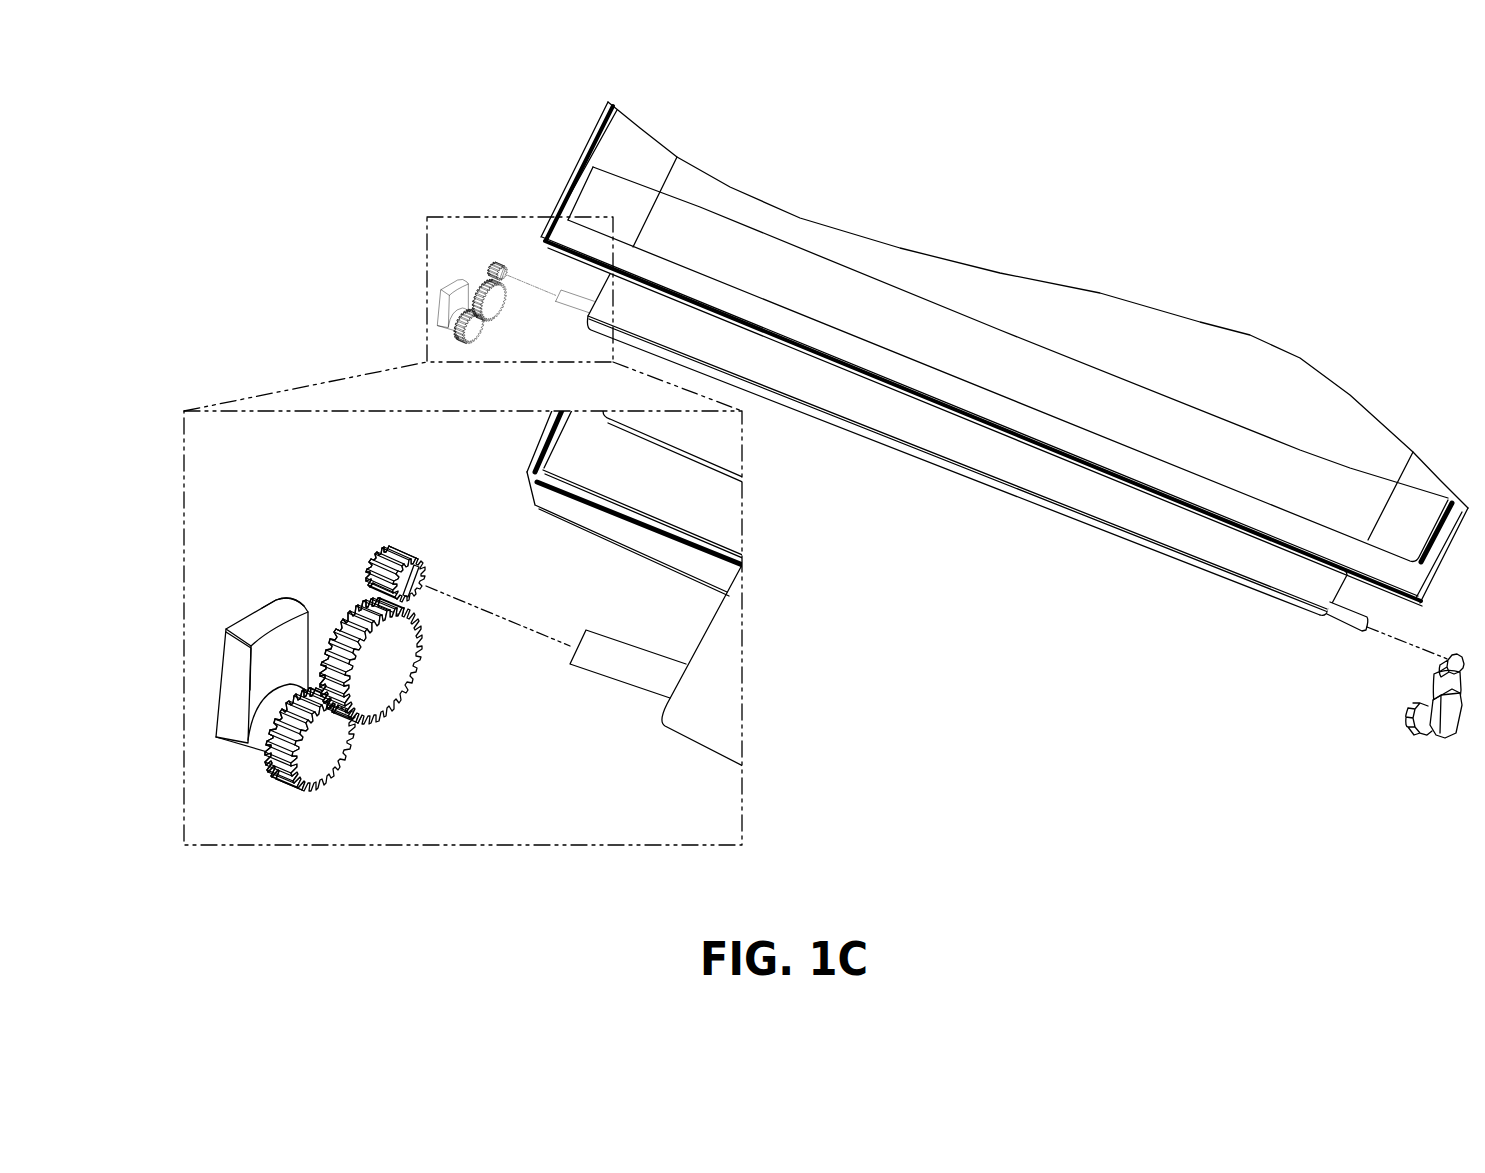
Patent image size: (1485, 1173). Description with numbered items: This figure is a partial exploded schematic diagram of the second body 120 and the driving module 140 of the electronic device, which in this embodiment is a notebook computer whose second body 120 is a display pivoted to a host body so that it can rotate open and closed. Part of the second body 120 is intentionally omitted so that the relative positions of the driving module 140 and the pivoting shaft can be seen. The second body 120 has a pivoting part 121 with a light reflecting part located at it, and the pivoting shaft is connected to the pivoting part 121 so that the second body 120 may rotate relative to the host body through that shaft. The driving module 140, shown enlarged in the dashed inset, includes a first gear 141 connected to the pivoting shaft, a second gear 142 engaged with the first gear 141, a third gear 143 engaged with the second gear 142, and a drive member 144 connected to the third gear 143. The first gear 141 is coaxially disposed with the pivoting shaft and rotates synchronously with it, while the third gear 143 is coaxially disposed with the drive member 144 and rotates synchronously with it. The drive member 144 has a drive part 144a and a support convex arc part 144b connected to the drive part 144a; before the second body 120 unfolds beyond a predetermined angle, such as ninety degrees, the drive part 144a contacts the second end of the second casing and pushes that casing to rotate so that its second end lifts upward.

The second body 120 is at (558, 151).
The pivoting part 121 is at (1340, 590).
The driving module 140 is at (166, 243).
The first gear 141 is at (394, 554).
The second gear 142 is at (380, 675).
The third gear 143 is at (319, 761).
The drive member 144 is at (241, 686).
The drive part 144a is at (289, 598).
The support convex arc part 144b is at (257, 630).